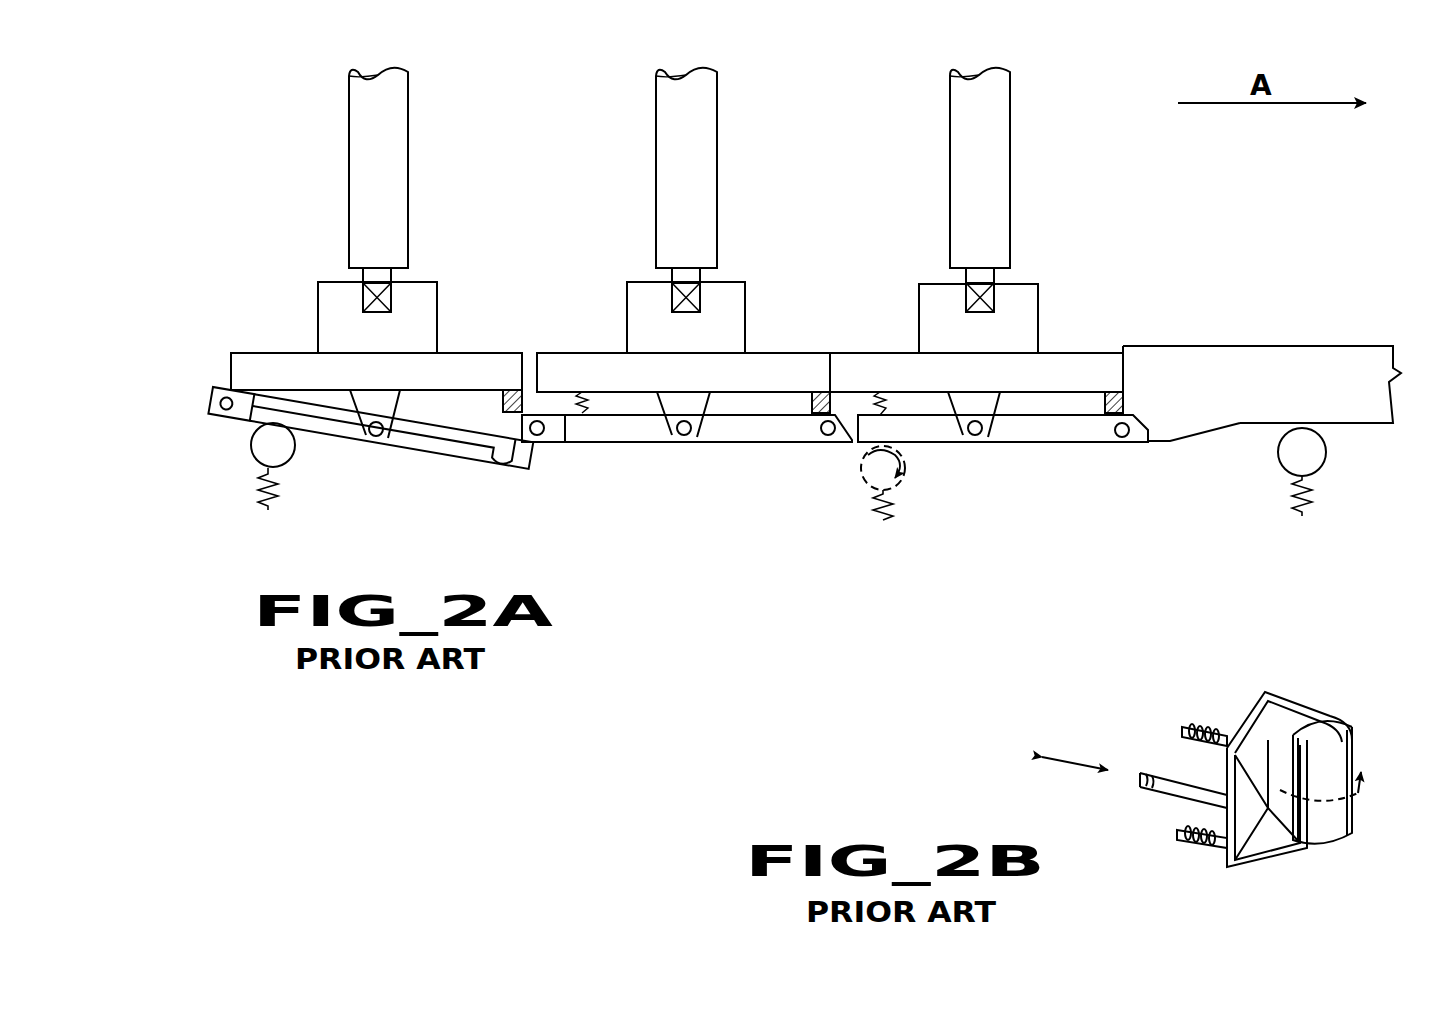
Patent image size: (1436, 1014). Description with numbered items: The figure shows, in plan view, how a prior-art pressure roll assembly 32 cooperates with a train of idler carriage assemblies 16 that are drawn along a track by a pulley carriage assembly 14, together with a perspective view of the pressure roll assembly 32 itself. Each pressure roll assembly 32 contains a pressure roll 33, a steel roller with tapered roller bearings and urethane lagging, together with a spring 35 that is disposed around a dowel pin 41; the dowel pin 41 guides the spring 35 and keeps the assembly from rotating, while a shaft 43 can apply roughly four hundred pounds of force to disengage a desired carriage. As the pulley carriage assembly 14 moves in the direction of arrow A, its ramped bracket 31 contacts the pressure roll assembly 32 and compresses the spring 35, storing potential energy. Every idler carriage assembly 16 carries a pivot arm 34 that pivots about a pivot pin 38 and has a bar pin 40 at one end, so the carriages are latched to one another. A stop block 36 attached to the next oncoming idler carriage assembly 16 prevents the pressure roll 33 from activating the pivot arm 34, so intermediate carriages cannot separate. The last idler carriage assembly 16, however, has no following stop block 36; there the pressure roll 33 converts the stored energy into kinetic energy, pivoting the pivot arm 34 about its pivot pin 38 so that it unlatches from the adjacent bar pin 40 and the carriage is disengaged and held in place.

In FIG. 2A, the pulley carriage assembly 14 is at (1262, 346).
In FIG. 2A, the idler carriage assembly 16 is at (426, 140).
In FIG. 2A, the ramped bracket 31 is at (1205, 425).
In FIG. 2A, the pressure roll assembly 32 is at (210, 495).
In FIG. 2B, the pressure roll assembly 32 is at (1308, 690).
In FIG. 2A, the pressure roll 33 is at (295, 460).
In FIG. 2B, the pressure roll 33 is at (1355, 752).
In FIG. 2A, the pivot arm 34 is at (499, 470).
In FIG. 2A, the spring 35 is at (285, 505).
In FIG. 2B, the spring 35 is at (1208, 722).
In FIG. 2A, the stop block 36 is at (503, 400).
In FIG. 2A, the pivot pin 38 is at (383, 440).
In FIG. 2A, the bar pin 40 is at (228, 418).
In FIG. 2B, the dowel pin 41 is at (1183, 727).
In FIG. 2B, the shaft 43 is at (1137, 787).